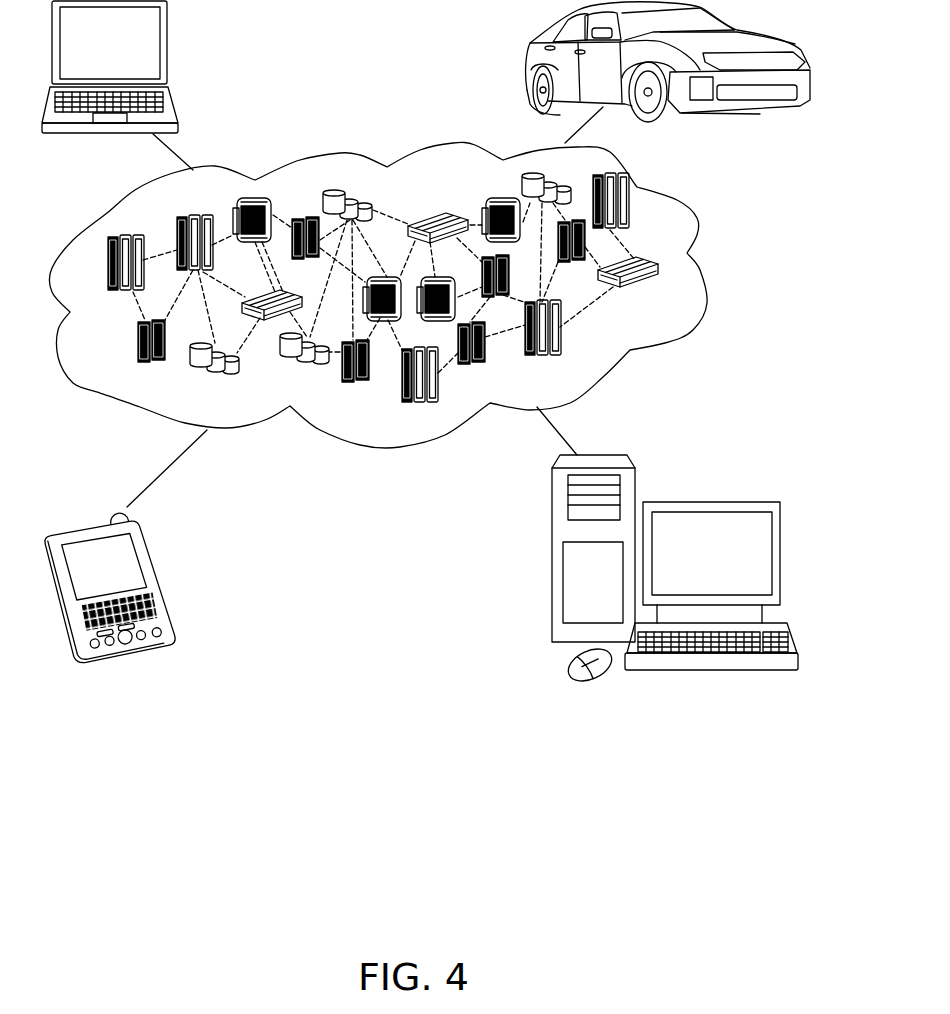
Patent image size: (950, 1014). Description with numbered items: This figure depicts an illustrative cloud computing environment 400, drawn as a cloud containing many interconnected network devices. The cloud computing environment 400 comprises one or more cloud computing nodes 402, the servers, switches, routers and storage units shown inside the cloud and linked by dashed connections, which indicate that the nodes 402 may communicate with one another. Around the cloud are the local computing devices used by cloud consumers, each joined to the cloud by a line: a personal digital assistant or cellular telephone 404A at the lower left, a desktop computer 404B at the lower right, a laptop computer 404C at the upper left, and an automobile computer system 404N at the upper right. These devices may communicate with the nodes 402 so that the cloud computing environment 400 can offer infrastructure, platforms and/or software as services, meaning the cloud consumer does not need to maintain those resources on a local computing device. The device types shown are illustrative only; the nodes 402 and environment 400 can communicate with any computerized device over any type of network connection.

The cloud computing environment 400 is at (685, 256).
The cloud computing nodes 402 is at (656, 292).
The personal digital assistant (PDA) or cellular telephone 404A is at (150, 548).
The desktop computer 404B is at (698, 502).
The laptop computer 404C is at (167, 30).
The automobile computer system 404N is at (528, 70).